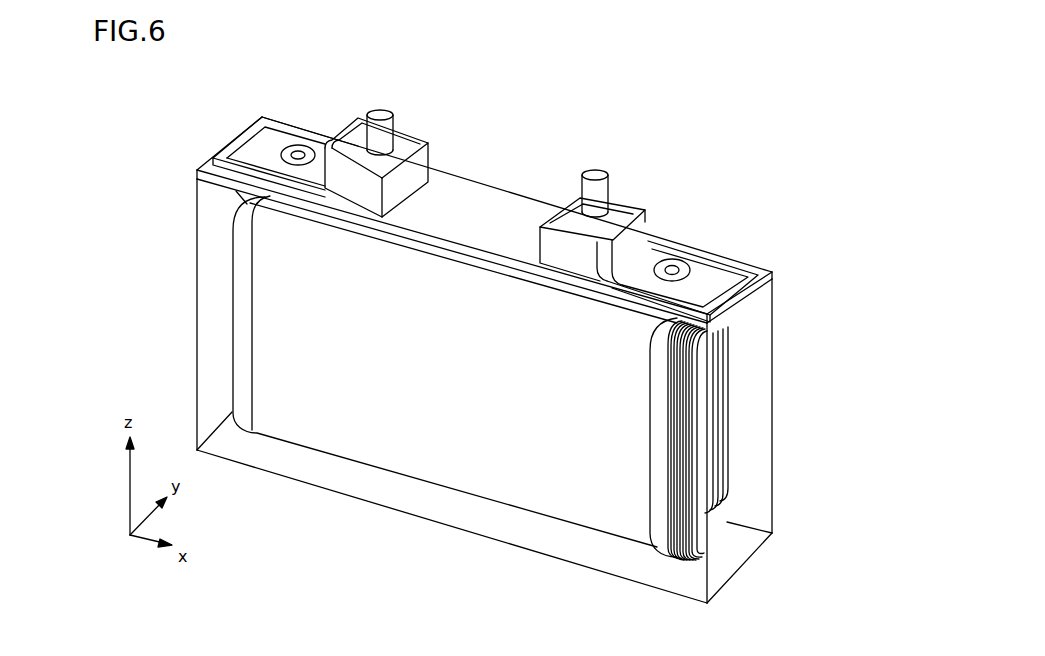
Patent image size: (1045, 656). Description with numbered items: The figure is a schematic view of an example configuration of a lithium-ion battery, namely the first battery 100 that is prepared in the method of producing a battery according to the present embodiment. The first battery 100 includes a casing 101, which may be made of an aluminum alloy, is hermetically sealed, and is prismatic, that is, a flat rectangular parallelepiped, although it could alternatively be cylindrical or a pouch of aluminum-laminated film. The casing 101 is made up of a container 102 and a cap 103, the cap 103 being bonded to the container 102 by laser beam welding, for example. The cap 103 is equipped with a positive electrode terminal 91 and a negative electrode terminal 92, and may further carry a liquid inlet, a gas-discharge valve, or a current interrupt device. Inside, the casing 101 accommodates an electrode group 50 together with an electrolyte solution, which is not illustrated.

The first battery 100 is at (545, 101).
The casing 101 is at (833, 235).
The container 102 is at (772, 320).
The cap 103 is at (772, 273).
The electrode group 50 is at (435, 388).
The positive electrode terminal 91 is at (596, 171).
The negative electrode terminal 92 is at (381, 113).